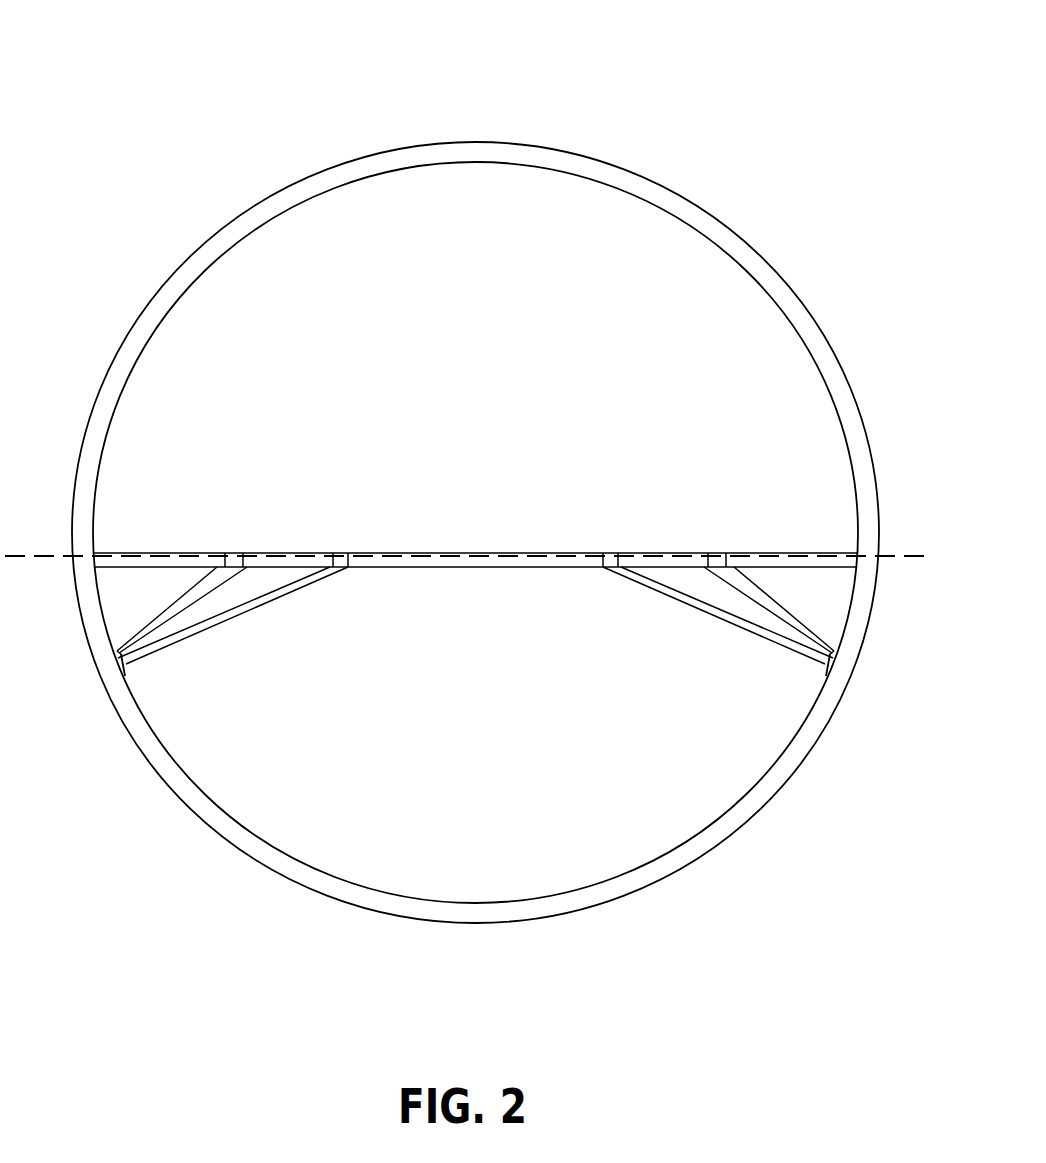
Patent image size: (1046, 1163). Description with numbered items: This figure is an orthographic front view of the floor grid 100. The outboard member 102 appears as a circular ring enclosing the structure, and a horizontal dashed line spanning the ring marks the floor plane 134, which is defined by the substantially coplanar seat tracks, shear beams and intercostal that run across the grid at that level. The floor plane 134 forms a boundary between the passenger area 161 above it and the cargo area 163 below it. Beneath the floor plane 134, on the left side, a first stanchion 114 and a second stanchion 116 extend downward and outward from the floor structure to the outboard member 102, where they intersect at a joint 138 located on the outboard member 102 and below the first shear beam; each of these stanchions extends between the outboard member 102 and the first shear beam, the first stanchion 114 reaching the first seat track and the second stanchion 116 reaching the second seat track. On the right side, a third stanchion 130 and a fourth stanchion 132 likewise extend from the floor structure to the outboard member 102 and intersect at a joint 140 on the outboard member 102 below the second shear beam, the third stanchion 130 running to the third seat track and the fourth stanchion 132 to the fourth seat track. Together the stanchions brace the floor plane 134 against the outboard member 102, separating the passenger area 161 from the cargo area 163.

The floor grid 100 is at (243, 72).
The outboard member 102 is at (713, 838).
The first stanchion 114 is at (167, 620).
The second stanchion 116 is at (210, 617).
The third stanchion 130 is at (782, 615).
The fourth stanchion 132 is at (677, 592).
The floor plane 134 is at (32, 556).
The joint 138 is at (122, 657).
The joint 140 is at (828, 655).
The passenger area 161 is at (488, 316).
The cargo area 163 is at (488, 763).